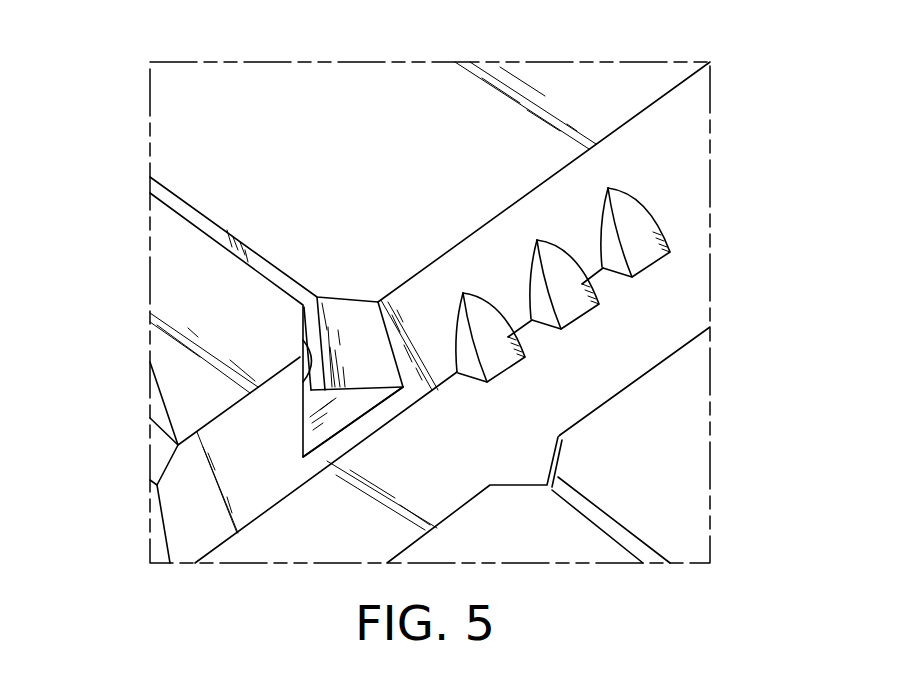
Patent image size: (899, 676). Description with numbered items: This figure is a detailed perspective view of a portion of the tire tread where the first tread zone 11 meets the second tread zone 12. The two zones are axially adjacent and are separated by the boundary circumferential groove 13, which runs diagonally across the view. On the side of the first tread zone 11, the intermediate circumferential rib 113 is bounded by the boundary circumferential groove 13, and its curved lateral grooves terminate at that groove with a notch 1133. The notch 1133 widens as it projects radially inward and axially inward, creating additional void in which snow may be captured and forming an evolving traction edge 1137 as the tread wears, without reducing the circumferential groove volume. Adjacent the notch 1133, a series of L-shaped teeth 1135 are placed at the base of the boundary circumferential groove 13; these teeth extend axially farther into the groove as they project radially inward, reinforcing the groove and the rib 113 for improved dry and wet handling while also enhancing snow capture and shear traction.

The first tread zone 11 is at (133, 138).
The second tread zone 12 is at (692, 457).
The boundary circumferential groove 13 is at (668, 320).
The intermediate circumferential rib 113 is at (597, 74).
The notch 1133 is at (367, 422).
The L-shaped tooth 1135 is at (628, 234).
The traction edge 1137 is at (364, 312).